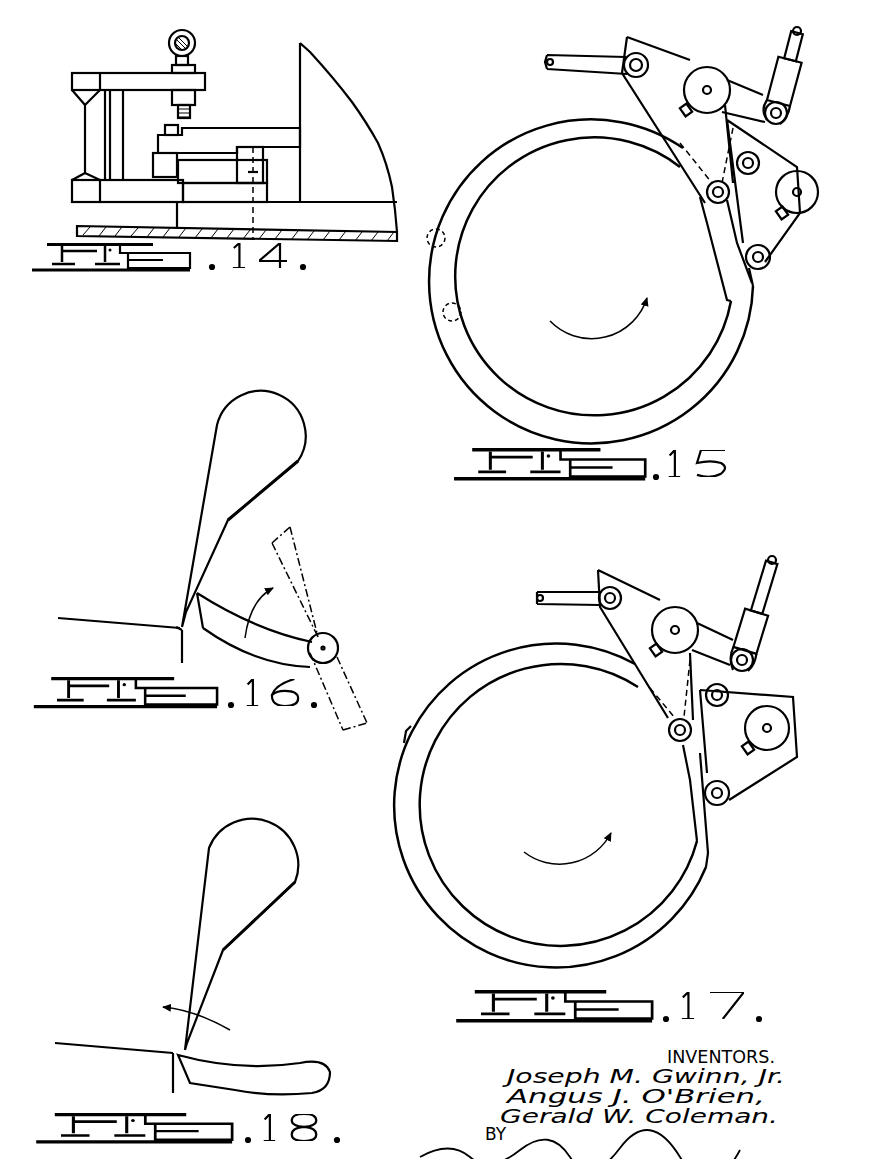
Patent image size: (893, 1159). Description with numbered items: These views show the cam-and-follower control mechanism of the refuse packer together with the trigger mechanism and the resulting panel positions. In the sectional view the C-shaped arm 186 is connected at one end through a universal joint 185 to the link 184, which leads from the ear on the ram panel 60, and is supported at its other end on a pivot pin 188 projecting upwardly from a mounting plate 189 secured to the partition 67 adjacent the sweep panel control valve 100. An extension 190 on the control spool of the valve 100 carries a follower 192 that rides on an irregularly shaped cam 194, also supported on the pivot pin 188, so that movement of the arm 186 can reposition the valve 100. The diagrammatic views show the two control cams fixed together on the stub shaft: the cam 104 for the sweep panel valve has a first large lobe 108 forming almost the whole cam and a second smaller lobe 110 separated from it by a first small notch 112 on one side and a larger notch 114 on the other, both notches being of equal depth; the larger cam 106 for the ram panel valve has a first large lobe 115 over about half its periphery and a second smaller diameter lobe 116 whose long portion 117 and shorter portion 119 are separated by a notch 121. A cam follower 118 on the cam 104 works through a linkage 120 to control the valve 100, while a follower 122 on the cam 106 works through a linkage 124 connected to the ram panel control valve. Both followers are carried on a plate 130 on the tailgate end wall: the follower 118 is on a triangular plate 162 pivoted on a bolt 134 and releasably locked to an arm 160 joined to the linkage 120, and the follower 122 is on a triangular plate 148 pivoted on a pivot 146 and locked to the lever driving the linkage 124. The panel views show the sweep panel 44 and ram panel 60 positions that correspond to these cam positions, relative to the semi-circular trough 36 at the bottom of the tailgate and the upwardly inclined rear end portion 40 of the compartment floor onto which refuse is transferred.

In FIG. 14, the link 184 is at (170, 38).
In FIG. 14, the universal joint 185 is at (190, 50).
In FIG. 14, the C-shaped arm 186 is at (90, 150).
In FIG. 14, the extension 190 is at (208, 128).
In FIG. 14, the follower 192 is at (148, 155).
In FIG. 14, the irregularly shaped cam 194 is at (222, 172).
In FIG. 14, the pivot pin 188 is at (265, 168).
In FIG. 14, the mounting plate 189 is at (305, 212).
In FIG. 14, the control valve 100 is at (315, 80).
In FIG. 14, the partition 67 is at (350, 240).
In FIG. 15, the plate 130 is at (628, 40).
In FIG. 17, the plate 130 is at (597, 578).
In FIG. 15, the linkage 120 is at (793, 33).
In FIG. 17, the linkage 120 is at (768, 565).
In FIG. 15, the arm 160 is at (738, 78).
In FIG. 17, the arm 160 is at (712, 625).
In FIG. 15, the triangular plate 162 is at (715, 145).
In FIG. 17, the triangular plate 162 is at (706, 681).
In FIG. 15, the second smaller diameter lobe 116 is at (535, 130).
In FIG. 15, the long portion 117 is at (590, 125).
In FIG. 15, the cam follower 122 is at (437, 229).
In FIG. 17, the cam follower 122 is at (735, 772).
In FIG. 15, the first small notch 112 is at (686, 176).
In FIG. 17, the first small notch 112 is at (645, 645).
In FIG. 15, the second smaller lobe 110 is at (700, 195).
In FIG. 17, the second smaller lobe 110 is at (675, 745).
In FIG. 15, the larger notch 114 is at (720, 230).
In FIG. 17, the larger notch 114 is at (693, 760).
In FIG. 15, the cam follower 118 is at (748, 140).
In FIG. 17, the cam follower 118 is at (660, 718).
In FIG. 15, the pivot 146 is at (757, 160).
In FIG. 15, the triangular plate 148 is at (782, 192).
In FIG. 17, the triangular plate 148 is at (744, 723).
In FIG. 15, the shorter portion 119 is at (762, 268).
In FIG. 17, the shorter portion 119 is at (713, 830).
In FIG. 15, the control cam 104 is at (483, 343).
In FIG. 17, the control cam 104 is at (467, 897).
In FIG. 15, the control cam 106 is at (478, 378).
In FIG. 17, the control cam 106 is at (663, 915).
In FIG. 15, the first large lobe 108 is at (663, 385).
In FIG. 15, the first large lobe 115 is at (725, 355).
In FIG. 17, the bolt 134 is at (600, 606).
In FIG. 17, the notch 121 is at (700, 775).
In FIG. 17, the linkage 124 is at (749, 736).
In FIG. 16, the ram panel 60 is at (188, 500).
In FIG. 18, the ram panel 60 is at (183, 935).
In FIG. 16, the sweep panel 44 is at (290, 633).
In FIG. 18, the sweep panel 44 is at (245, 1063).
In FIG. 16, the rear end portion 40 is at (90, 620).
In FIG. 18, the rear end portion 40 is at (85, 1047).
In FIG. 16, the trough 36 is at (180, 648).
In FIG. 18, the trough 36 is at (170, 1078).